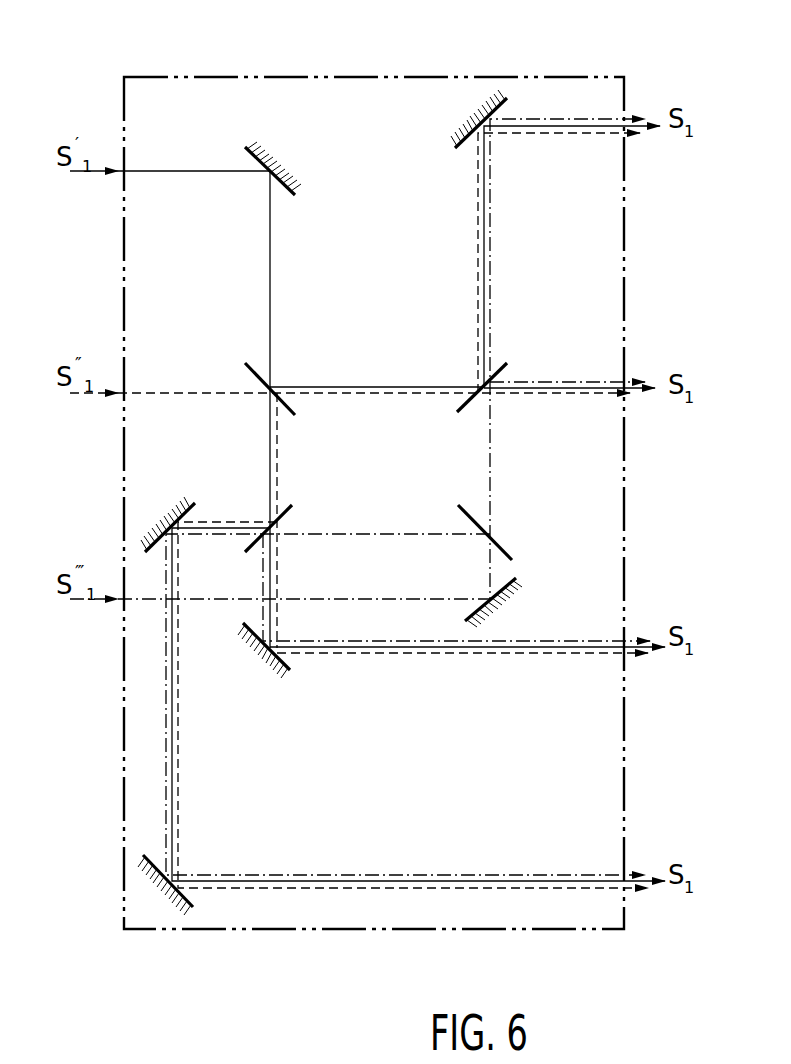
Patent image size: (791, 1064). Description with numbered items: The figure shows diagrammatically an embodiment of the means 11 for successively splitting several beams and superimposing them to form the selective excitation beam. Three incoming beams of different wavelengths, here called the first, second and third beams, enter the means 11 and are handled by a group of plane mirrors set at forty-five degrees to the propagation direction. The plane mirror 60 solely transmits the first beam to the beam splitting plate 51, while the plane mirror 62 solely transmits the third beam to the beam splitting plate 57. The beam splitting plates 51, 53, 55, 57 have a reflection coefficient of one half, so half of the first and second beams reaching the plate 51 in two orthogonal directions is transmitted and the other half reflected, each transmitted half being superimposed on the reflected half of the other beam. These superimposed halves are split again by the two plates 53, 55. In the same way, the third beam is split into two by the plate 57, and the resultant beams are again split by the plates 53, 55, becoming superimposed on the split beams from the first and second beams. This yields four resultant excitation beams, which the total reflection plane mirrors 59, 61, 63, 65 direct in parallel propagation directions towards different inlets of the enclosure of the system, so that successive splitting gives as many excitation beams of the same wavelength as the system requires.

The means for superimposing several beams 11 is at (156, 74).
The plane mirror 60 is at (292, 176).
The total reflection plane mirror 59 is at (458, 150).
The beam splitting plate 51 is at (262, 366).
The beam splitting plate 53 is at (502, 368).
The total reflection plane mirror 61 is at (180, 500).
The beam splitting plate 55 is at (288, 508).
The beam splitting plate 57 is at (505, 550).
The plane mirror 62 is at (512, 588).
The total reflection plane mirror 65 is at (287, 675).
The total reflection plane mirror 63 is at (178, 905).